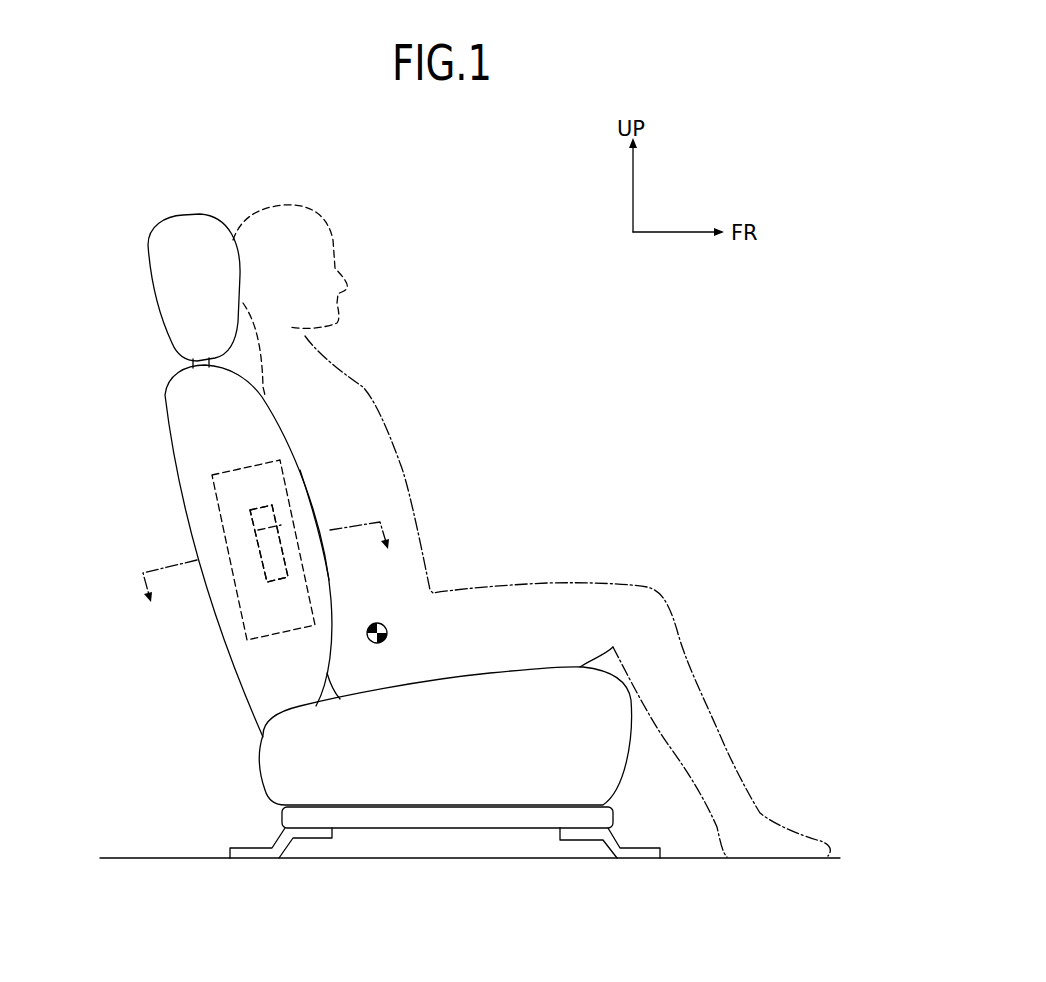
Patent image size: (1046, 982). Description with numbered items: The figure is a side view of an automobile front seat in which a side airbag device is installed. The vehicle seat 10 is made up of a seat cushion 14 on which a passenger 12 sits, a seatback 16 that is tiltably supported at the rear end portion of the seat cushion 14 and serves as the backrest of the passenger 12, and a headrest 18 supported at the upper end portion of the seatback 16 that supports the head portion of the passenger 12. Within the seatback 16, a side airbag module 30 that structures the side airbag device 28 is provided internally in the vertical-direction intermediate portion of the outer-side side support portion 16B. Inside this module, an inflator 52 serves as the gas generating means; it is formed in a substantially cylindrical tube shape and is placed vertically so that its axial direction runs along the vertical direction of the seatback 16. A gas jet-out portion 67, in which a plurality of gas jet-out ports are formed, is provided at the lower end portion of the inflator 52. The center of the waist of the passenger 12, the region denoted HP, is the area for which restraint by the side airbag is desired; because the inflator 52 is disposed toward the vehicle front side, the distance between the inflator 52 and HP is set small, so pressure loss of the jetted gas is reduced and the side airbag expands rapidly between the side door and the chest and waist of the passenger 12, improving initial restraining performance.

The vehicle seat 10 is at (552, 611).
The passenger 12 is at (370, 380).
The seat cushion 14 is at (507, 670).
The seatback 16 is at (170, 437).
The outer-side side support portion 16B is at (310, 488).
The headrest 18 is at (157, 302).
The side airbag device 28 is at (263, 550).
The side airbag module 30 is at (224, 545).
The inflator 52 is at (282, 585).
The gas jet-out portion 67 is at (280, 593).
The center of the waist HP is at (380, 645).